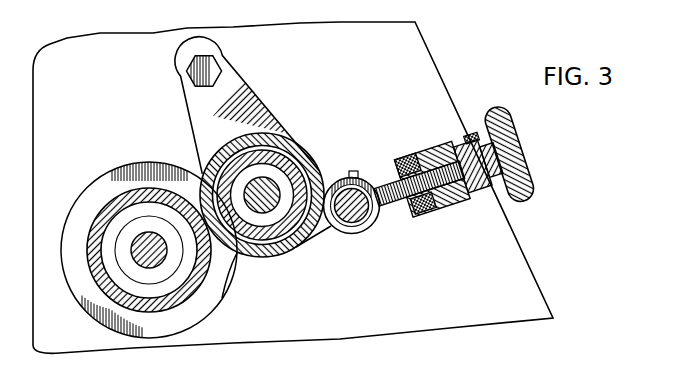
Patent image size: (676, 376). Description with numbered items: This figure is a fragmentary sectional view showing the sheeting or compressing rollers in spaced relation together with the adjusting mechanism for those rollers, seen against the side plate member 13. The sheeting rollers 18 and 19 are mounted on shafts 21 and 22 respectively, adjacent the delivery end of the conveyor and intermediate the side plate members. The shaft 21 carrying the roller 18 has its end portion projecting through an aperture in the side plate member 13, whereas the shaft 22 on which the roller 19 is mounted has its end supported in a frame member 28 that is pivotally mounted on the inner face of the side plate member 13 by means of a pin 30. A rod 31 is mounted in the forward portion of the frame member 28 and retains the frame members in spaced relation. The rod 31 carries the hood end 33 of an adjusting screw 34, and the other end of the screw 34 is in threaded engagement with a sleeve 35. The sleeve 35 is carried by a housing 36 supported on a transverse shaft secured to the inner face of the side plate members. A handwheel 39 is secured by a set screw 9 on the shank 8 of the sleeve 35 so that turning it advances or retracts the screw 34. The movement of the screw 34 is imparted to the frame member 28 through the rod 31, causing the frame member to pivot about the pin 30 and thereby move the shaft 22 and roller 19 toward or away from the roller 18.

The shank 8 is at (502, 197).
The set screw 9 is at (478, 147).
The side plate member 13 is at (429, 53).
The sheeting roller 18 is at (106, 293).
The sheeting roller 19 is at (300, 145).
The shaft 21 is at (143, 231).
The shaft 22 is at (269, 213).
The frame member 28 is at (256, 96).
The pin 30 is at (187, 71).
The rod 31 is at (361, 223).
The hood end 33 is at (331, 222).
The adjusting screw 34 is at (384, 212).
The sleeve 35 is at (480, 194).
The housing 36 is at (450, 198).
The handwheel 39 is at (528, 182).